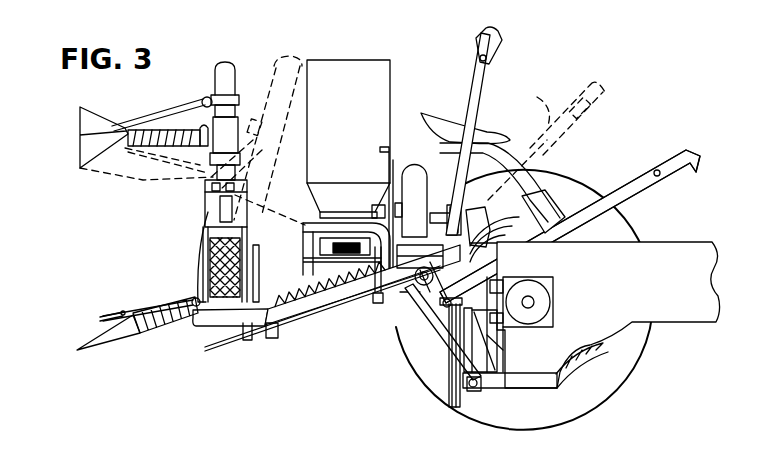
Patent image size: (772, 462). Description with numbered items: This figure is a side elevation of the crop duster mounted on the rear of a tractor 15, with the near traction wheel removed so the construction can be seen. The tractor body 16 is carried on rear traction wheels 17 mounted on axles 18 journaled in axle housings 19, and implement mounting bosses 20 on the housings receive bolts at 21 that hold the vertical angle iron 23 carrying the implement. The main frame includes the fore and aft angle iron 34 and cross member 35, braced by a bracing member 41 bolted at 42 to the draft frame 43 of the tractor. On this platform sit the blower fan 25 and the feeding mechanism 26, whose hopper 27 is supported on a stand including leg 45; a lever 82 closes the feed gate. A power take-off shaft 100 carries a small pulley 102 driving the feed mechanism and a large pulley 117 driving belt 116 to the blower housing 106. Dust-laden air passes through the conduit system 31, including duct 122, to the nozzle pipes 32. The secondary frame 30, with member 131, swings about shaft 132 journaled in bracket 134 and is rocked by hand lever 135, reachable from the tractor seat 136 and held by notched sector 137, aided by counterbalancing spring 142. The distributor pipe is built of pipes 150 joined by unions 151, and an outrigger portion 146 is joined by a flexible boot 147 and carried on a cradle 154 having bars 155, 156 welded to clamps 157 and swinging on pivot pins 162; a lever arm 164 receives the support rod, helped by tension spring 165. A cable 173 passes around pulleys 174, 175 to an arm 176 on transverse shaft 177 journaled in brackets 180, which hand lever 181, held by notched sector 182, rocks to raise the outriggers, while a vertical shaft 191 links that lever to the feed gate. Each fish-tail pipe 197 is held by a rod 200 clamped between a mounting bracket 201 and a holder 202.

The tractor 15 is at (670, 227).
The body 16 is at (653, 278).
The rear traction wheel 17 is at (598, 395).
The axle 18 is at (535, 306).
The axle housing 19 is at (549, 305).
The implement mounting boss 20 is at (528, 302).
The bolted connection 21 is at (504, 325).
The vertical angle iron 23 is at (498, 340).
The blower fan 25 is at (410, 158).
The feeding mechanism 26 is at (300, 213).
The hopper 27 is at (329, 123).
The secondary supporting frame 30 is at (215, 337).
The conduit system 31 is at (189, 281).
The nozzle pipe 32 is at (160, 118).
The angle iron 34 is at (345, 312).
The cross member 35 is at (415, 318).
The bracing member 41 is at (440, 335).
The bolted connection 42 is at (476, 390).
The draft frame 43 is at (520, 388).
The leg 45 is at (392, 247).
The lever 82 is at (383, 150).
The power take-off shaft 100 is at (448, 345).
The pulley 102 is at (460, 352).
The blower housing 106 is at (416, 172).
The drive belt 116 is at (452, 407).
The pulley 117 is at (449, 385).
The duct 122 is at (303, 258).
The frame member 131 is at (300, 335).
The shaft 132 is at (431, 218).
The bracket 134 is at (461, 212).
The hand lever 135 is at (483, 89).
The tractor seat 136 is at (458, 125).
The notched sector 137 is at (489, 219).
The counterbalancing spring 142 is at (415, 283).
The outrigger portion 146 is at (284, 62).
The flexible boot 147 is at (210, 255).
The pipe 150 is at (215, 75).
The union 151 is at (226, 140).
The cradle 154 is at (203, 226).
The bar 155 is at (318, 242).
The bar 156 is at (200, 268).
The clamp 157 is at (205, 215).
The pivot pin 162 is at (193, 312).
The lever arm 164 is at (272, 338).
The counterbalancing tension spring 165 is at (260, 278).
The cable 173 is at (390, 308).
The pulley 174 is at (248, 341).
The pulley 175 is at (380, 303).
The arm 176 is at (505, 283).
The transverse shaft 177 is at (463, 340).
The bracket 180 is at (418, 324).
The hand lever 181 is at (535, 251).
The notched sector 182 is at (556, 232).
The shaft 191 is at (370, 218).
The fish-tail pipe 197 is at (78, 137).
The rod 200 is at (150, 305).
The mounting bracket 201 is at (202, 99).
The holder 202 is at (118, 312).